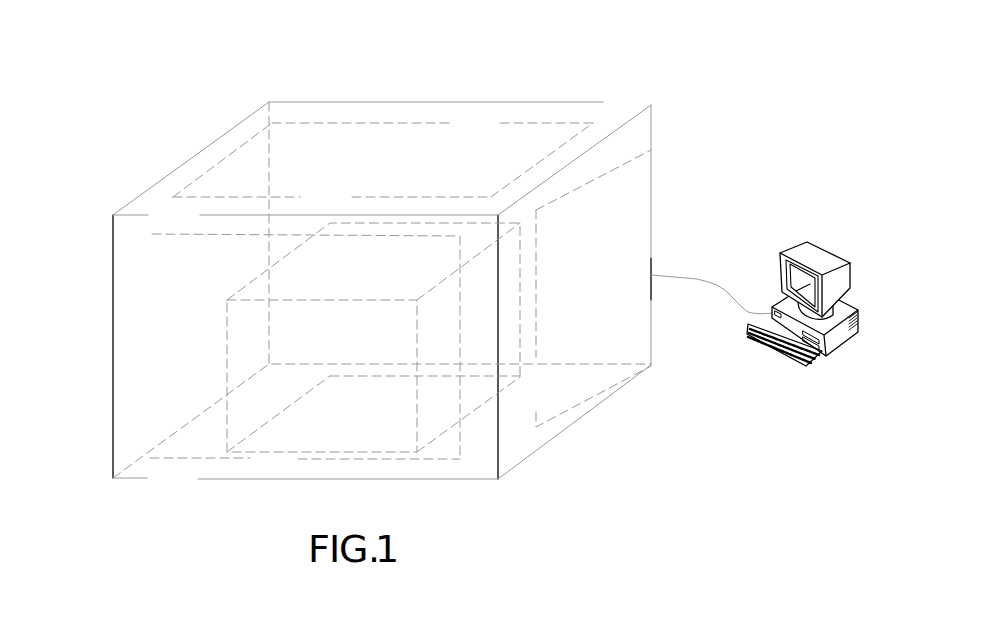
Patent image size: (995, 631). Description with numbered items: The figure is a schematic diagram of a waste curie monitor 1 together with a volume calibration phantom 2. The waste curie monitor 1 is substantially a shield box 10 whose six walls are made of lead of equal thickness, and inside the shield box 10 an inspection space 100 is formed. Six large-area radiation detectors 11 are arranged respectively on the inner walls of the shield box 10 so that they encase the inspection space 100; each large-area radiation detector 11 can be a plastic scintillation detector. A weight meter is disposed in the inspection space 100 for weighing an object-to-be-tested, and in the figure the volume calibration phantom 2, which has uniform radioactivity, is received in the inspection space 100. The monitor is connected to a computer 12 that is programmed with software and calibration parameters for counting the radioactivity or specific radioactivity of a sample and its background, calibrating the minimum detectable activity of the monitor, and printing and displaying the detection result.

The waste curie monitor 1 is at (220, 95).
The volume calibration phantom 2 is at (227, 323).
The shield box 10 is at (597, 113).
The large-area radiation detector 11 is at (420, 118).
The computer 12 is at (828, 250).
The inspection space 100 is at (172, 344).